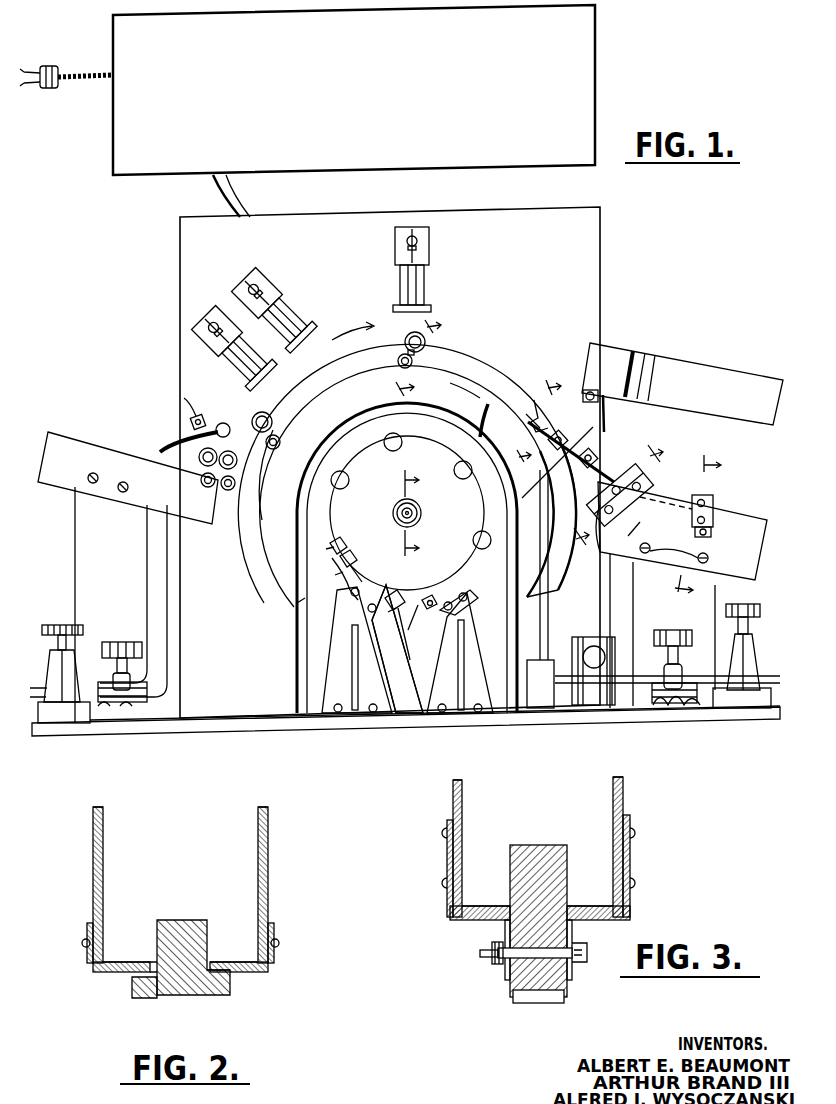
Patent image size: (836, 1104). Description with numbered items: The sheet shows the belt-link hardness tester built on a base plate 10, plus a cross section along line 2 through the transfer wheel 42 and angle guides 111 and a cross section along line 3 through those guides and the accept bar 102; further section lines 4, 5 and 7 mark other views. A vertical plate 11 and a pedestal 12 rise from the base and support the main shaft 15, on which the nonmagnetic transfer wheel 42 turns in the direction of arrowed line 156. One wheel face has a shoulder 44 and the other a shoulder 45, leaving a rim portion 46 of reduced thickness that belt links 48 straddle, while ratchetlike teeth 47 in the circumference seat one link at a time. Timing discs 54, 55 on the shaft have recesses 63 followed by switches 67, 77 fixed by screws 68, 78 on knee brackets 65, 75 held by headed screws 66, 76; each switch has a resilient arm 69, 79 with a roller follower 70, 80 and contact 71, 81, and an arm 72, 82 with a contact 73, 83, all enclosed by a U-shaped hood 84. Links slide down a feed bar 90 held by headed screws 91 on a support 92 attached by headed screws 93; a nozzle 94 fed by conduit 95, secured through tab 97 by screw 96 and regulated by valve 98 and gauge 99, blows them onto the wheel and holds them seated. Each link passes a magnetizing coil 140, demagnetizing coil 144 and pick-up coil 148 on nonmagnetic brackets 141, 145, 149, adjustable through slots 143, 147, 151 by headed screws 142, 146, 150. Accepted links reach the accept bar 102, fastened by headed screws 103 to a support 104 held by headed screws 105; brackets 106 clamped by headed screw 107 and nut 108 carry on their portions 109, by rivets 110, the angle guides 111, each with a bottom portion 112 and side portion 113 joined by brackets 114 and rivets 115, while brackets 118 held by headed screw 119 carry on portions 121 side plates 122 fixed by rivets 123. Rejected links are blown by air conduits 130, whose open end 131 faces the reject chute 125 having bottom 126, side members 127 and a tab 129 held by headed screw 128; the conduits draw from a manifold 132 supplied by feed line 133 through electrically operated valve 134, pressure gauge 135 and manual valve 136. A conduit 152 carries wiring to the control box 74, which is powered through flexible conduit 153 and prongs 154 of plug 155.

In FIG. 1, the section line 2- 2 is at (538, 424).
In FIG. 1, the section line 3- 3 is at (624, 507).
In FIG. 1, the section line 4- 4 is at (409, 514).
In FIG. 1, the section line 5- 5 is at (698, 524).
In FIG. 1, the section line 7- 7 is at (421, 358).
In FIG. 1, the base plate 10 is at (240, 727).
In FIG. 1, the vertical plate 11 is at (586, 250).
In FIG. 1, the pedestal 12 is at (400, 712).
In FIG. 1, the main shaft 15 is at (420, 511).
In FIG. 1, the transfer wheel 42 is at (246, 551).
In FIG. 2, the transfer wheel 42 is at (126, 997).
In FIG. 1, the shoulder 44 is at (452, 375).
In FIG. 2, the shoulder 44 is at (220, 960).
In FIG. 2, the shoulder 45 is at (150, 962).
In FIG. 1, the portion of reduced thickness 46 is at (490, 382).
In FIG. 2, the portion of reduced thickness 46 is at (180, 926).
In FIG. 1, the ratchetlike teeth 47 is at (262, 597).
In FIG. 1, the belt links 48 is at (407, 342).
In FIG. 1, the timing disc 54 is at (476, 532).
In FIG. 1, the timing disc 55 is at (422, 450).
In FIG. 1, the recesses 63 is at (390, 446).
In FIG. 1, the knee bracket 65 is at (435, 700).
In FIG. 1, the headed screws 66 is at (480, 716).
In FIG. 1, the switches 67 is at (395, 620).
In FIG. 1, the screws 68 is at (470, 590).
In FIG. 1, the resilient arm 69 is at (397, 649).
In FIG. 1, the roller follower 70 is at (388, 596).
In FIG. 1, the contact 71 is at (403, 638).
In FIG. 1, the arm 72 is at (432, 594).
In FIG. 1, the contact 73 is at (416, 640).
In FIG. 1, the control box 74 is at (588, 42).
In FIG. 1, the knee bracket 75 is at (330, 700).
In FIG. 1, the headed screws 76 is at (374, 716).
In FIG. 1, the switches 77 is at (336, 601).
In FIG. 1, the screws 78 is at (360, 588).
In FIG. 1, the resilient arm 79 is at (326, 549).
In FIG. 1, the roller follower 80 is at (333, 543).
In FIG. 1, the contact 81 is at (335, 575).
In FIG. 1, the arm 82 is at (297, 603).
In FIG. 1, the fixed contact 83 is at (352, 560).
In FIG. 1, the U-shaped hood 84 is at (280, 503).
In FIG. 1, the feed bar 90 is at (70, 442).
In FIG. 1, the headed screws 91 is at (120, 482).
In FIG. 1, the support 92 is at (78, 555).
In FIG. 1, the headed screws 93 is at (105, 722).
In FIG. 1, the nozzle 94 is at (224, 423).
In FIG. 1, the conduit 95 is at (164, 448).
In FIG. 1, the screw 96 is at (192, 420).
In FIG. 1, the tab 97 is at (194, 408).
In FIG. 1, the manually operable valve 98 is at (62, 624).
In FIG. 1, the pressure indicating gauge 99 is at (123, 642).
In FIG. 1, the accept bar 102 is at (765, 526).
In FIG. 3, the accept bar 102 is at (535, 850).
In FIG. 1, the headed screws 103 is at (647, 554).
In FIG. 1, the support 104 is at (712, 606).
In FIG. 1, the headed screws 105 is at (678, 708).
In FIG. 1, the bracket 106 is at (622, 462).
In FIG. 3, the bracket 106 is at (444, 922).
In FIG. 3, the headed screw 107 is at (587, 946).
In FIG. 3, the nut 108 is at (495, 965).
In FIG. 1, the portion 109 is at (630, 470).
In FIG. 3, the portion 109 is at (448, 909).
In FIG. 3, the rivets 110 is at (444, 882).
In FIG. 1, the angle guide 111 is at (530, 397).
In FIG. 2, the angle guide 111 is at (87, 828).
In FIG. 3, the angle guide 111 is at (447, 798).
In FIG. 1, the bottom portion 112 is at (534, 422).
In FIG. 2, the bottom portion 112 is at (122, 960).
In FIG. 3, the bottom portion 112 is at (490, 905).
In FIG. 1, the side portion 113 is at (600, 446).
In FIG. 2, the side portion 113 is at (93, 856).
In FIG. 3, the side portion 113 is at (455, 812).
In FIG. 1, the brackets 114 is at (555, 462).
In FIG. 2, the brackets 114 is at (93, 968).
In FIG. 1, the rivets 115 is at (564, 434).
In FIG. 2, the rivets 115 is at (84, 943).
In FIG. 1, the bracket 118 is at (702, 495).
In FIG. 1, the headed screw 119 is at (706, 534).
In FIG. 1, the portion 121 is at (712, 498).
In FIG. 1, the side plate 122 is at (626, 534).
In FIG. 1, the rivets 123 is at (714, 512).
In FIG. 1, the reject chute 125 is at (763, 370).
In FIG. 1, the bottom 126 is at (640, 344).
In FIG. 1, the side members 127 is at (660, 360).
In FIG. 1, the headed screw 128 is at (587, 392).
In FIG. 1, the tab 129 is at (594, 390).
In FIG. 1, the compressed air conduits 130 is at (555, 637).
In FIG. 1, the open end 131 is at (486, 406).
In FIG. 1, the manifold 132 is at (537, 712).
In FIG. 1, the feed line 133 is at (766, 683).
In FIG. 1, the electrically operated valve 134 is at (595, 700).
In FIG. 1, the pressure gauge 135 is at (668, 640).
In FIG. 1, the manually operable valve 136 is at (750, 658).
In FIG. 1, the magnetizing coil 140 is at (250, 366).
In FIG. 1, the bracket 141 is at (216, 343).
In FIG. 1, the headed screw 142 is at (206, 330).
In FIG. 1, the slot 143 is at (210, 338).
In FIG. 1, the demagnetizing coil 144 is at (288, 322).
In FIG. 1, the bracket 145 is at (275, 303).
In FIG. 1, the headed screw 146 is at (258, 281).
In FIG. 1, the slot 147 is at (248, 292).
In FIG. 1, the pick-up coil 148 is at (424, 287).
In FIG. 1, the bracket 149 is at (424, 257).
In FIG. 1, the headed screw 150 is at (420, 236).
In FIG. 1, the slot 151 is at (420, 247).
In FIG. 1, the conduit 152 is at (222, 192).
In FIG. 1, the flexible conduit 153 is at (84, 73).
In FIG. 1, the prongs 154 is at (27, 71).
In FIG. 1, the electrical plug 155 is at (55, 60).
In FIG. 1, the arrowed line 156 is at (342, 329).